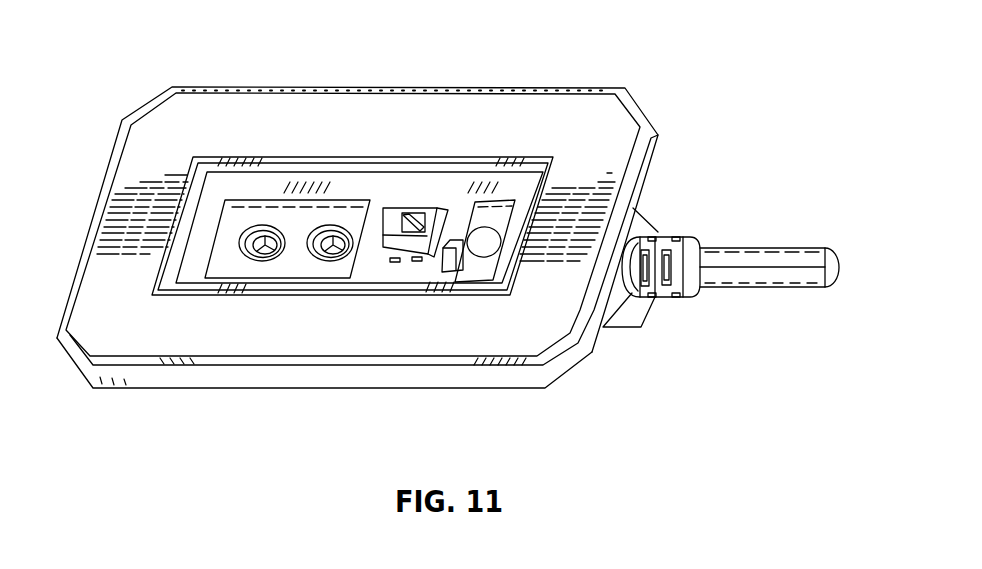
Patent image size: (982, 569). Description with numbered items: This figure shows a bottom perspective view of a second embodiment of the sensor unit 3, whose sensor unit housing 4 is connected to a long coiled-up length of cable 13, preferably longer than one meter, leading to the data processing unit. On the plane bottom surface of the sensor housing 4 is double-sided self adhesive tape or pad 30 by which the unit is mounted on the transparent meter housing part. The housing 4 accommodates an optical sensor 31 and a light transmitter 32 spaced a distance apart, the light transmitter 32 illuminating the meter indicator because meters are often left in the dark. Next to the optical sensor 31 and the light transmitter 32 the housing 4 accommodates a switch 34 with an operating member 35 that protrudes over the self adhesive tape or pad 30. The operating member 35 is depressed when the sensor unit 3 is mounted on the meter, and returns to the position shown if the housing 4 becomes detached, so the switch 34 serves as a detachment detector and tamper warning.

The sensor unit 3 is at (448, 233).
The sensor unit housing 4 is at (362, 392).
The cable 13 is at (730, 233).
The self adhesive tape or pad 30 is at (357, 204).
The optical sensor 31 is at (336, 253).
The light transmitter 32 is at (268, 253).
The switch 34 is at (404, 187).
The operating member 35 is at (416, 212).